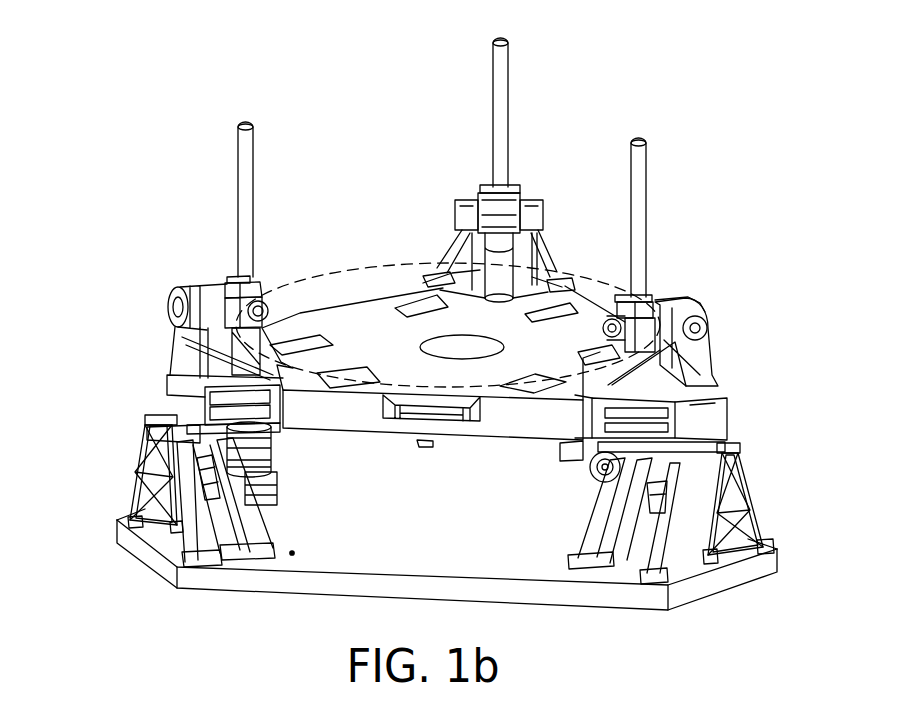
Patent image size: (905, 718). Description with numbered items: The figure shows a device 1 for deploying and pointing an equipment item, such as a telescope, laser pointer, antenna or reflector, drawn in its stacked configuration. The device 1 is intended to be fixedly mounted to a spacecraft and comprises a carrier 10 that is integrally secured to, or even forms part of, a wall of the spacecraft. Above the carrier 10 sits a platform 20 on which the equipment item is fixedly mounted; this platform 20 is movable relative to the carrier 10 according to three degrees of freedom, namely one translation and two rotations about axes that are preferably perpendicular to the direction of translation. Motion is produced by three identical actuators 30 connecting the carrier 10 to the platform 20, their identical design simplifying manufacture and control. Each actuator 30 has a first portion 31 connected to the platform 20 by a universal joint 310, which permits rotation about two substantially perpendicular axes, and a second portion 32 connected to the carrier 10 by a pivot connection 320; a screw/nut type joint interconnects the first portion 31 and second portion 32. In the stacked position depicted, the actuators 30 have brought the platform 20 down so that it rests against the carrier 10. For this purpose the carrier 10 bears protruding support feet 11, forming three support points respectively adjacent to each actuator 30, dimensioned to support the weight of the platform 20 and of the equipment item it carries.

The device for deploying and pointing 1 is at (157, 263).
The carrier 10 is at (252, 596).
The support feet 11 is at (130, 492).
The platform 20 is at (332, 313).
The actuator 30 is at (237, 182).
The first portion 31 is at (606, 313).
The universal joint 310 is at (692, 302).
The second portion 32 is at (712, 368).
The pivot connection 320 is at (597, 470).